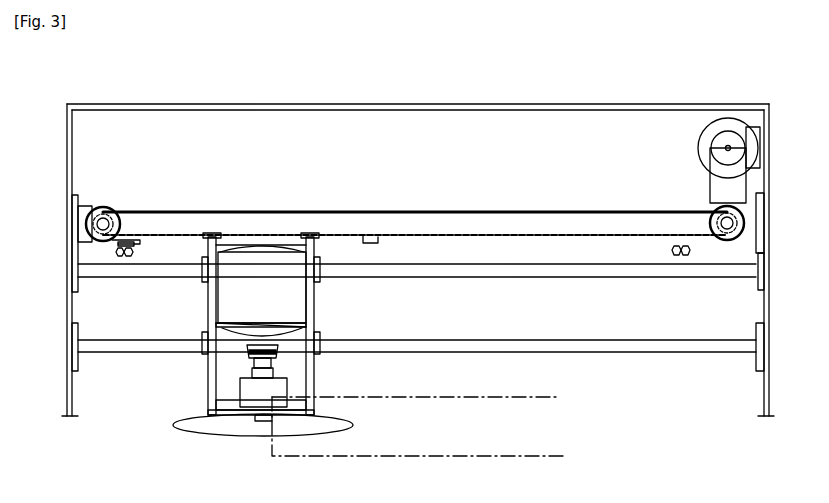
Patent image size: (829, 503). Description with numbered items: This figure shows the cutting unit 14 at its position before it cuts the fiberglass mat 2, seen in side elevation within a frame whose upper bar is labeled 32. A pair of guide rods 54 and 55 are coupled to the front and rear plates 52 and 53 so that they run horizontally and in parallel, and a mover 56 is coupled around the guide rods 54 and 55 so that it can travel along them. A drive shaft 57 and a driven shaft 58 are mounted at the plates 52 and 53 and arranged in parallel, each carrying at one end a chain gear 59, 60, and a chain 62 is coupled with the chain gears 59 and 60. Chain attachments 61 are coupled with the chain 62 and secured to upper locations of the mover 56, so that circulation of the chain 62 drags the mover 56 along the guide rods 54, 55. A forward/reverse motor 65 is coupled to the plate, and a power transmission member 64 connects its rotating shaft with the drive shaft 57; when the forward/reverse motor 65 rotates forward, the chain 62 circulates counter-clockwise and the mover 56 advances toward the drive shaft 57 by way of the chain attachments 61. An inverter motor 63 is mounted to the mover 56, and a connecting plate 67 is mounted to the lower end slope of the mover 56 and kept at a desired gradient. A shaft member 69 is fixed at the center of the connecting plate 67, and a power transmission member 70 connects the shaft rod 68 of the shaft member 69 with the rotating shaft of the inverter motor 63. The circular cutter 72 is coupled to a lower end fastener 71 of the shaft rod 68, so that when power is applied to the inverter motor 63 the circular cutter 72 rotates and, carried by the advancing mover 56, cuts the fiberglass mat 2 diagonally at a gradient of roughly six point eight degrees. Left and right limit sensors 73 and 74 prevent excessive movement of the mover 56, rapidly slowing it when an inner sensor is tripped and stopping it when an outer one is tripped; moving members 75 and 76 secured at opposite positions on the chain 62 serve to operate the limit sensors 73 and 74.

The fiberglass mat 2 is at (496, 458).
The cutting unit 14 is at (100, 92).
The top frame plate 32 is at (396, 104).
The front plate 52 is at (67, 166).
The rear plate 53 is at (766, 184).
The guide rod 54 is at (563, 271).
The guide rod 55 is at (584, 353).
The mover 56 is at (316, 306).
The drive shaft 57 is at (717, 212).
The driven shaft 58 is at (100, 214).
The chain gear 59 is at (118, 214).
The chain gear 60 is at (720, 242).
The chain attachment 61 is at (210, 233).
The chain 62 is at (432, 212).
The inverter motor 63 is at (256, 284).
The power transmission member 64 is at (746, 160).
The forward/reverse motor 65 is at (729, 120).
The connecting plate 67 is at (222, 406).
The shaft rod 68 is at (244, 366).
The shaft member 69 is at (250, 388).
The power transmission member 70 is at (280, 360).
The lower end fastener 71 is at (249, 421).
The circular cutter 72 is at (192, 426).
The left limit sensor 73 is at (126, 262).
The right limit sensor 74 is at (678, 259).
The moving member 75 is at (133, 246).
The moving member 76 is at (378, 242).